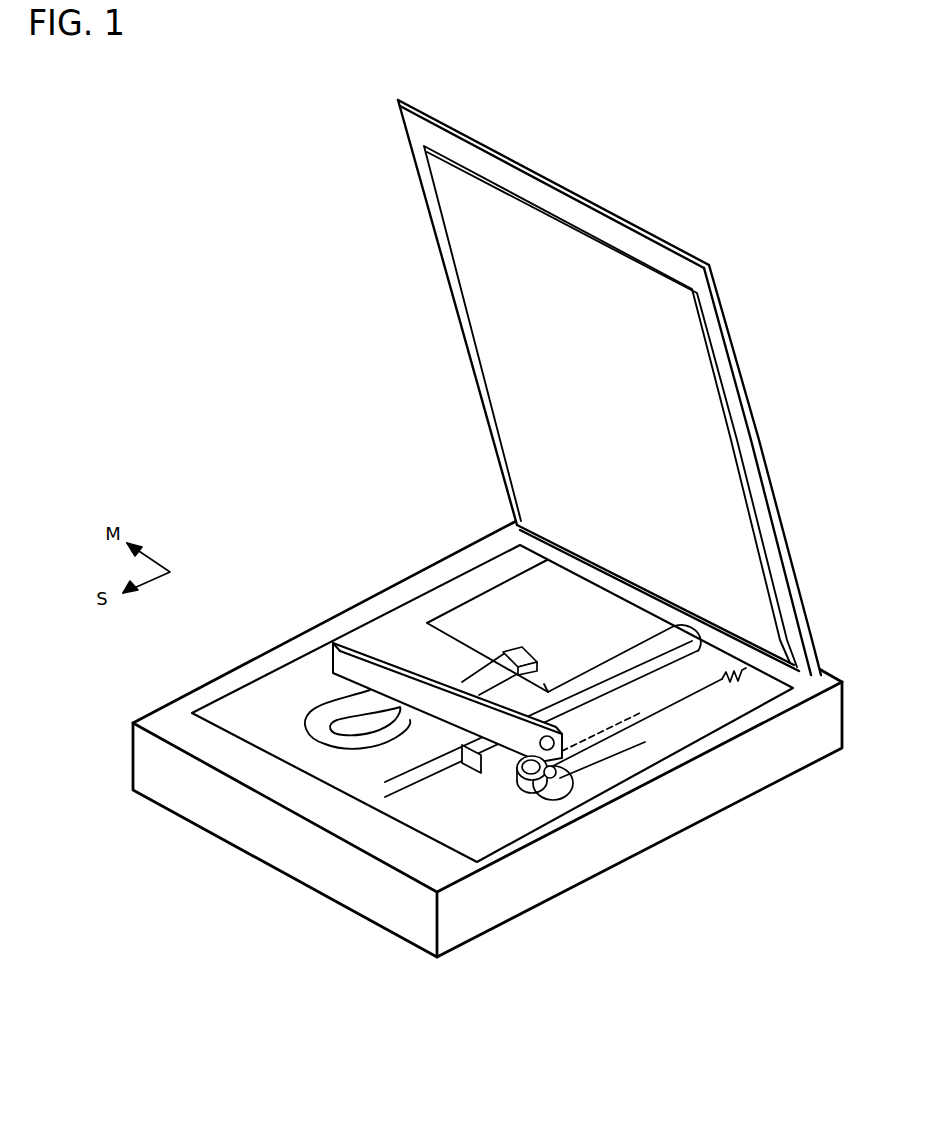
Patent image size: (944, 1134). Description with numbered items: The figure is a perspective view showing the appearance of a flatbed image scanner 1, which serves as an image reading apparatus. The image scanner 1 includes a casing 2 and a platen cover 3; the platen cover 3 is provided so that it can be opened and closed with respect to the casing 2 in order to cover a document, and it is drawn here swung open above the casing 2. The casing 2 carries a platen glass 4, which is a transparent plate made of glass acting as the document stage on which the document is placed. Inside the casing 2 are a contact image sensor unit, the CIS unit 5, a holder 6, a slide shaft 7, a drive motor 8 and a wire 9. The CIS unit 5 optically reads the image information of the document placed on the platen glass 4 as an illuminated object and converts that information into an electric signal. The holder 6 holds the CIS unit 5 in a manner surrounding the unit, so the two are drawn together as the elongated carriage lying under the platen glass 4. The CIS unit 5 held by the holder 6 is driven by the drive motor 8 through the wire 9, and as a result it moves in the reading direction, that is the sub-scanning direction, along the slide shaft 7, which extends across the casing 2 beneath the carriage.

The image scanner 1 is at (322, 426).
The casing 2 is at (690, 807).
The platen cover 3 is at (735, 340).
The platen glass 4 is at (237, 705).
The CIS unit 5 is at (355, 640).
The holder 6 is at (343, 665).
The slide shaft 7 is at (413, 786).
The drive motor 8 is at (541, 795).
The wire 9 is at (383, 781).